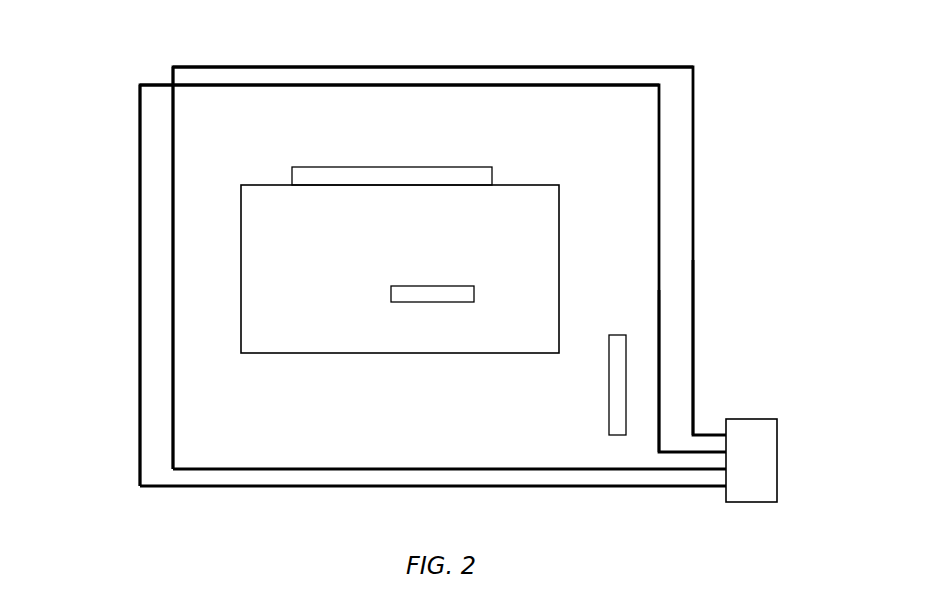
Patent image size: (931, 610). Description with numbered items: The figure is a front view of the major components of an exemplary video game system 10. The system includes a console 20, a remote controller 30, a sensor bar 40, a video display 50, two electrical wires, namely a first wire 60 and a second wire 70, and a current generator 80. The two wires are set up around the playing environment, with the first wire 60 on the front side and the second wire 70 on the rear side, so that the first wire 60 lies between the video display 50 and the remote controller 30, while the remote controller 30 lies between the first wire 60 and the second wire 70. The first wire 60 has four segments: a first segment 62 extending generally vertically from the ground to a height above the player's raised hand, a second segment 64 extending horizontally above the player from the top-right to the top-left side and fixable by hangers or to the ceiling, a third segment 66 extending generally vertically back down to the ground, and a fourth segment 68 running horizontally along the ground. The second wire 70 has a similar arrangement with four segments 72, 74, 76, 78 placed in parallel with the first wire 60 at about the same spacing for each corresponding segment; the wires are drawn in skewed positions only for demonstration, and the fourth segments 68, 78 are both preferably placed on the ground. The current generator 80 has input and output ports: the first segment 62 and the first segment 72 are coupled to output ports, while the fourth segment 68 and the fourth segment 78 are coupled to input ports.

The video game system 10 is at (739, 106).
The console 20 is at (609, 397).
The remote controller 30 is at (398, 286).
The sensor bar 40 is at (368, 167).
The video display 50 is at (533, 185).
The first wire 60 is at (693, 167).
The first segment 62 is at (693, 284).
The second segment 64 is at (484, 67).
The third segment 66 is at (173, 233).
The fourth segment 68 is at (367, 469).
The second wire 70 is at (659, 202).
The first segment 72 is at (659, 318).
The second segment 74 is at (286, 85).
The third segment 76 is at (140, 367).
The fourth segment 78 is at (218, 486).
The current generator 80 is at (737, 419).